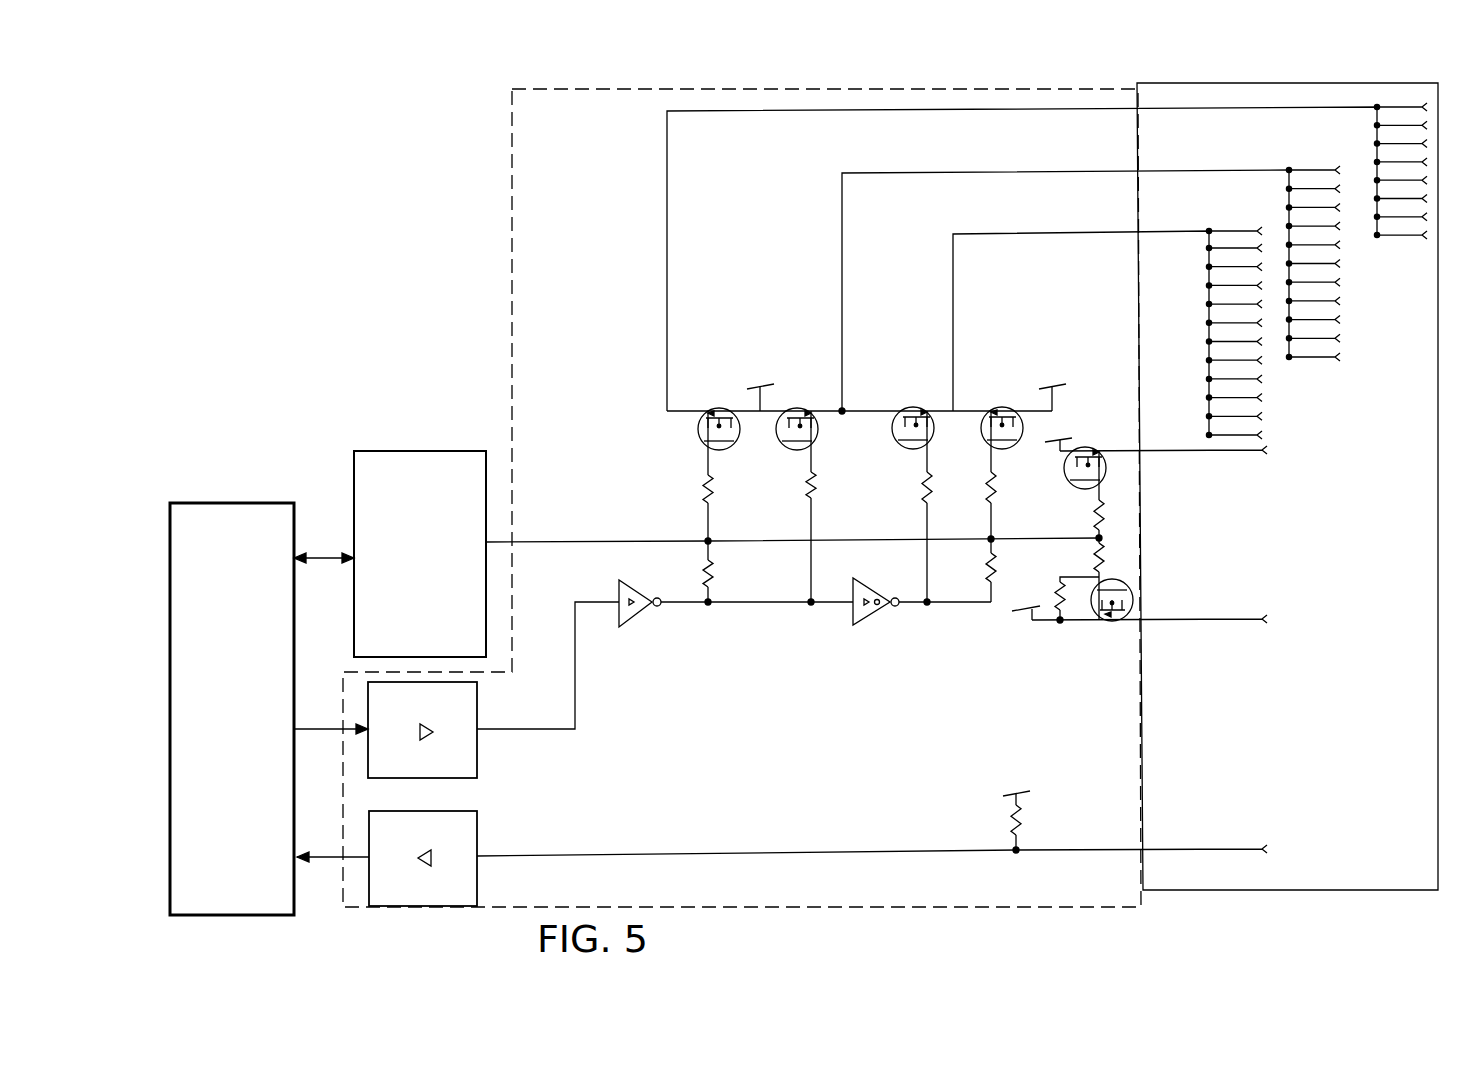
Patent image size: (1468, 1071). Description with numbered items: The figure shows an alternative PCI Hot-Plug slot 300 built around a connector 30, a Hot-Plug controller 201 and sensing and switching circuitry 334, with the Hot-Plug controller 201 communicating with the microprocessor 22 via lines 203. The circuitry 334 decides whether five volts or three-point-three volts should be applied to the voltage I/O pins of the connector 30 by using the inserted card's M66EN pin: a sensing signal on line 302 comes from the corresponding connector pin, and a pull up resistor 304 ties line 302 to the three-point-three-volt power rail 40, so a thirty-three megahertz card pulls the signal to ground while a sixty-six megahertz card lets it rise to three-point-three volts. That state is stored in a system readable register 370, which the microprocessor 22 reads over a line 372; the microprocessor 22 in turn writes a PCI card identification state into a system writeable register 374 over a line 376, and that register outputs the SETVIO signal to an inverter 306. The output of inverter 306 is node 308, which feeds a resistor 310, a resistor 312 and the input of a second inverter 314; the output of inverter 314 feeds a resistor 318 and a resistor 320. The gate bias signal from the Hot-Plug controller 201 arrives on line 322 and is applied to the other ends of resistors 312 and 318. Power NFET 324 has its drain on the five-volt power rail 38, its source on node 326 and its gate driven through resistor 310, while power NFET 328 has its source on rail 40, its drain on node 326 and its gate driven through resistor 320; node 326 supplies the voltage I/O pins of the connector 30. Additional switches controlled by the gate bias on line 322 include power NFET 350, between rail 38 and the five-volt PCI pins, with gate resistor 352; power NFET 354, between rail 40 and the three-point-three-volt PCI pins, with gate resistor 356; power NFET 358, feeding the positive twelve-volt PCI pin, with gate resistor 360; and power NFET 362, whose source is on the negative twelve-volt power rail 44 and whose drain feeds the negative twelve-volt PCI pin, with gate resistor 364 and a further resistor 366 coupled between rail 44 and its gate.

The microprocessor 22 is at (252, 503).
The Hot-Plug controller 201 is at (376, 451).
The lines 203 is at (312, 553).
The PCI Hot-Plug slot 300 is at (362, 264).
The sensing and switching circuitry 334 is at (511, 193).
The connector 30 is at (1137, 120).
The 5-volt power rail 38 is at (750, 387).
The 3.3-volt power rail 40 is at (1054, 386).
The −12-volt power rail 44 is at (1030, 613).
The power NFET 350 is at (719, 410).
The power NFET 324 is at (798, 410).
The node 326 is at (845, 408).
The power NFET 328 is at (912, 410).
The power NFET 354 is at (1003, 410).
The power NFET 358 is at (1090, 448).
The power NFET 362 is at (1105, 618).
The resistor 352 is at (712, 487).
The resistor 310 is at (813, 484).
The resistor 320 is at (917, 487).
The resistor 356 is at (995, 483).
The resistor 360 is at (1105, 520).
The resistor 364 is at (1095, 553).
The resistor 366 is at (1056, 588).
The resistor 312 is at (712, 574).
The resistor 318 is at (988, 578).
The pull up resistor 304 is at (1020, 822).
The line 322 is at (705, 540).
The node 308 is at (710, 607).
The inverter 306 is at (632, 613).
The inverter 314 is at (868, 612).
The line 376 is at (318, 727).
The system writeable register 374 is at (477, 695).
The system readable register 370 is at (575, 699).
The line 372 is at (325, 855).
The line 302 is at (905, 851).